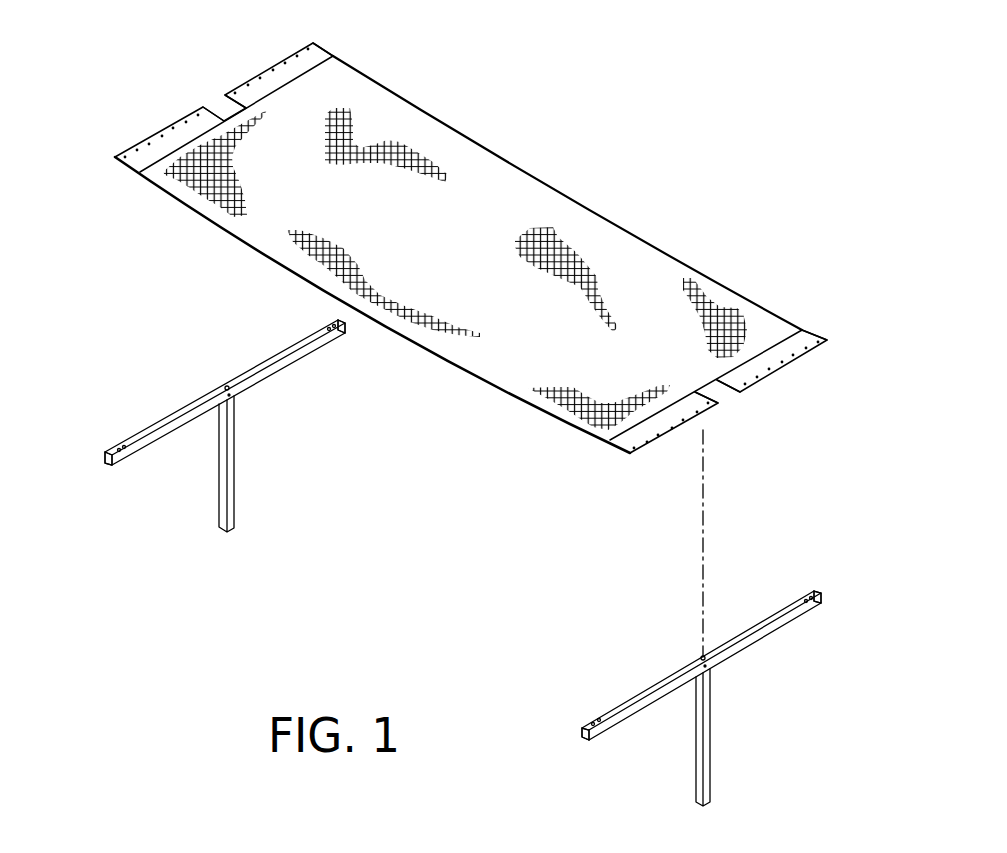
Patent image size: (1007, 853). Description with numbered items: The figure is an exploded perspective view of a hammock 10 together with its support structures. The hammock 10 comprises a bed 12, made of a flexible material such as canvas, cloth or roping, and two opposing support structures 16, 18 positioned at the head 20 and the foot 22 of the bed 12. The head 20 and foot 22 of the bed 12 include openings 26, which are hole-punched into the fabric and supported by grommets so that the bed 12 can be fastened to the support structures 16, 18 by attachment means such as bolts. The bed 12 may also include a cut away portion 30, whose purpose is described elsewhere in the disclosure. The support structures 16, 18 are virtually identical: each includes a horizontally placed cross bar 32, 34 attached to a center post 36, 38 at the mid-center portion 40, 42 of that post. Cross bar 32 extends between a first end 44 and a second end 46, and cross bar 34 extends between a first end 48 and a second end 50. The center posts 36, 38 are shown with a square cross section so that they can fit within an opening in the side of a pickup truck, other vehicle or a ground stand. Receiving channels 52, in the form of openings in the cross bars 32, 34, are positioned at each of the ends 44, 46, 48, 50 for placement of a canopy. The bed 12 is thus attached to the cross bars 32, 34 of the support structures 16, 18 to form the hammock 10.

The hammock 10 is at (183, 256).
The bed 12 is at (472, 262).
The support structure 16 is at (194, 411).
The support structure 18 is at (678, 618).
The head 20 is at (333, 56).
The foot 22 is at (812, 330).
The openings 26 is at (273, 68).
The cut away portion 30 is at (218, 105).
The cross bar 32 is at (252, 370).
The cross bar 34 is at (757, 628).
The center post 36 is at (233, 450).
The center post 38 is at (712, 723).
The mid-center portion 40 is at (226, 386).
The mid-center portion 42 is at (702, 656).
The first end 44 is at (103, 456).
The second end 46 is at (338, 320).
The first end 48 is at (582, 729).
The second end 50 is at (820, 588).
The receiving channels 52 is at (120, 465).